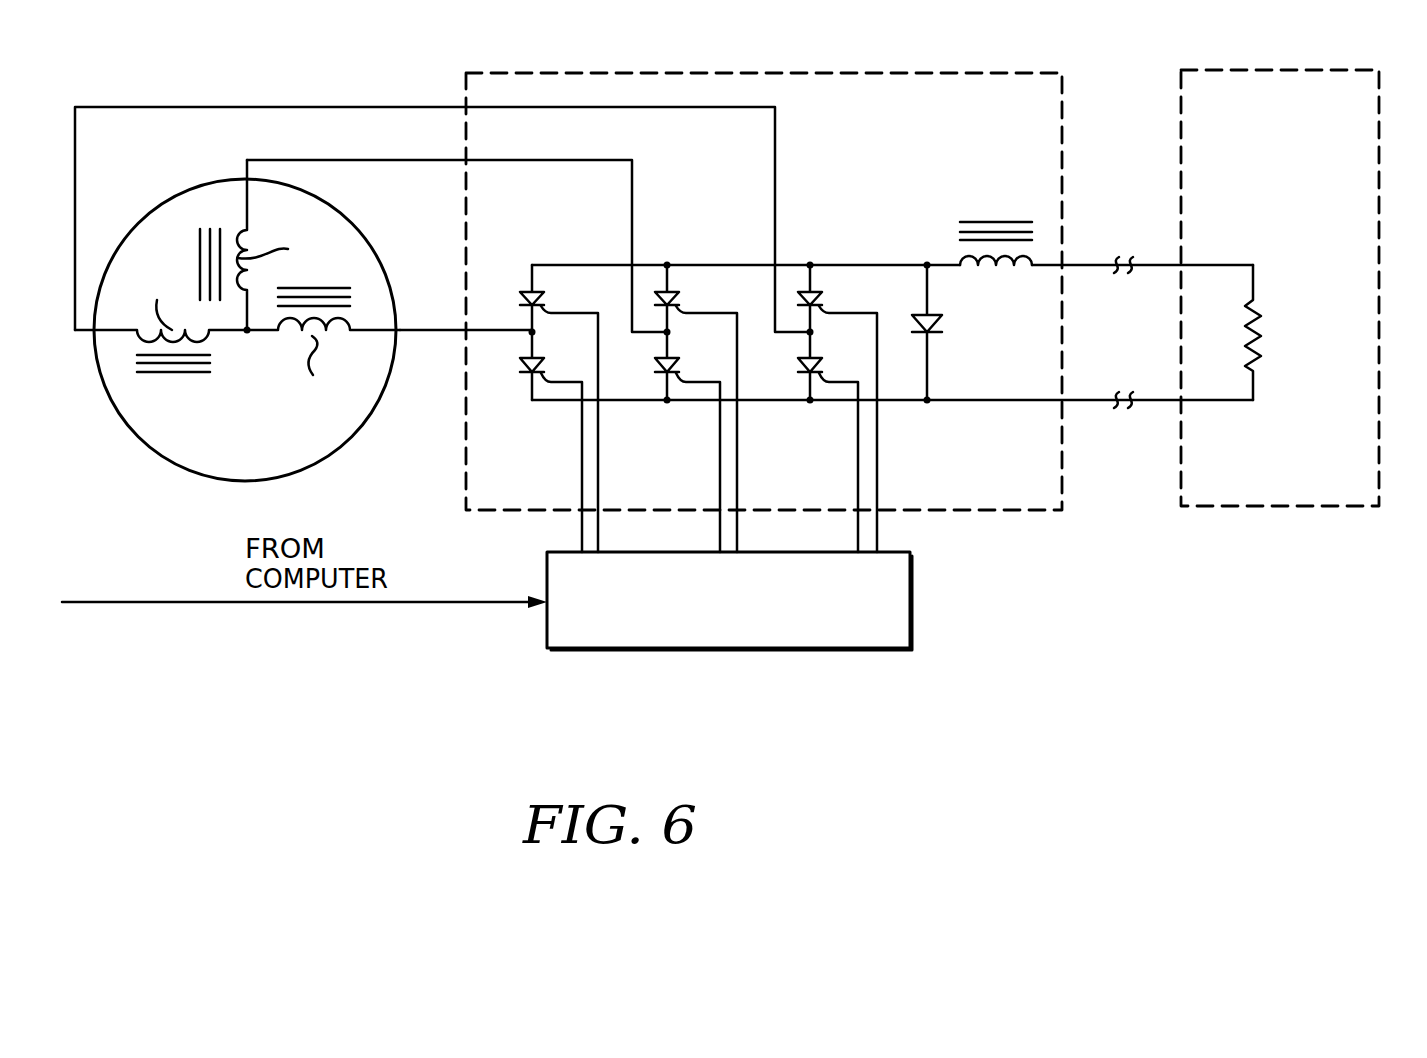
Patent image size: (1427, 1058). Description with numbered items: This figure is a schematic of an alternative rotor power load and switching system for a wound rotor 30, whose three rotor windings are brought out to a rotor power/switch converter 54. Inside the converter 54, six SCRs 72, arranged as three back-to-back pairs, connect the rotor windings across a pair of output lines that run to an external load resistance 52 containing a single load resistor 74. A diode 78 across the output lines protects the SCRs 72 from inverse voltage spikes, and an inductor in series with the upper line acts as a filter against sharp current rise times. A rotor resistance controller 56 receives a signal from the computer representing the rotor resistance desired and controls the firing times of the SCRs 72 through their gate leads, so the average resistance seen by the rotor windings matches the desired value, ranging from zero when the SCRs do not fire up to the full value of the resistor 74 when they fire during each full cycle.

The rotor 30 is at (166, 201).
The external load resistance 52 is at (1294, 70).
The rotor power/switch converter 54 is at (790, 72).
The rotor resistance controller 56 is at (910, 578).
The SCRs 72 is at (534, 308).
The load resistor 74 is at (1262, 321).
The diode 78 is at (944, 321).